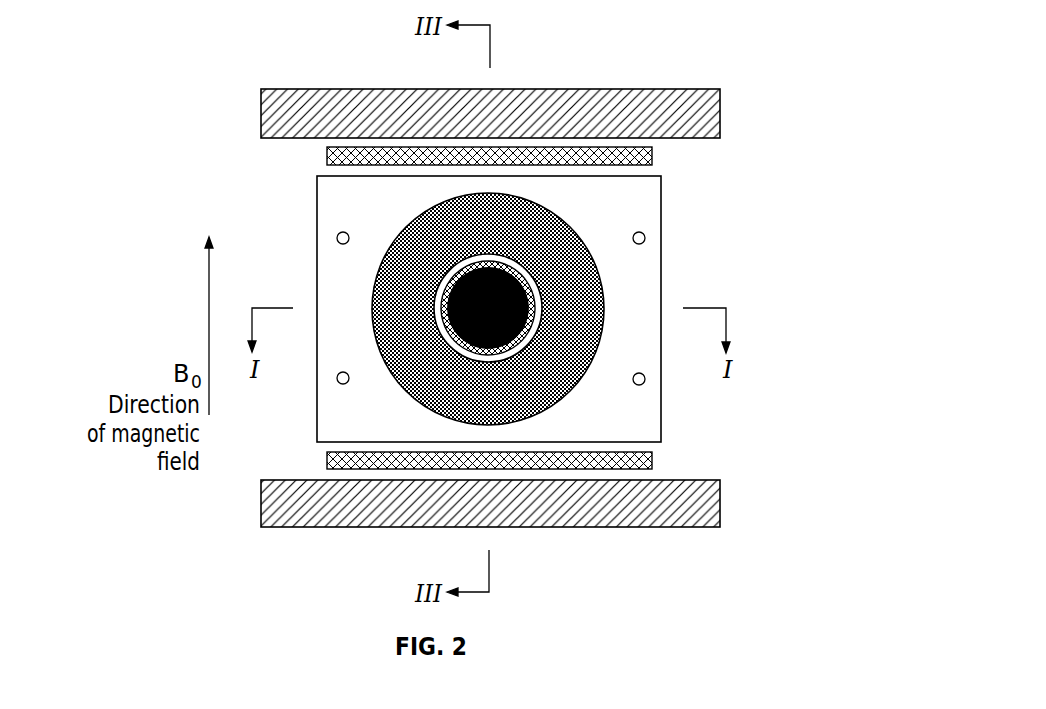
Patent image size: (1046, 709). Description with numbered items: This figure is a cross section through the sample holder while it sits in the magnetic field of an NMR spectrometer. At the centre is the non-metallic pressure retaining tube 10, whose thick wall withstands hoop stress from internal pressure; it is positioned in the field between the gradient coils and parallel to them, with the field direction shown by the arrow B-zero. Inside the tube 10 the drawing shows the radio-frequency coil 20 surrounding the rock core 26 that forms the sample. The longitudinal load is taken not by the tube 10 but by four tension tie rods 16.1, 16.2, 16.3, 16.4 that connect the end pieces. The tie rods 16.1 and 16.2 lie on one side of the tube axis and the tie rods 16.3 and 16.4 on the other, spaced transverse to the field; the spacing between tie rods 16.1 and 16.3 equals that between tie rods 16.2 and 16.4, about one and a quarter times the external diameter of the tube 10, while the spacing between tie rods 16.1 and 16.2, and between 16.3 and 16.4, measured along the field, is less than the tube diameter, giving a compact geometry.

The pressure retaining tube 10 is at (551, 388).
The tie rod 16.1 is at (337, 238).
The tie rod 16.2 is at (337, 382).
The tie rod 16.3 is at (645, 238).
The tie rod 16.4 is at (645, 381).
The radio-frequency coil 20 is at (437, 277).
The rock core 26 is at (510, 300).